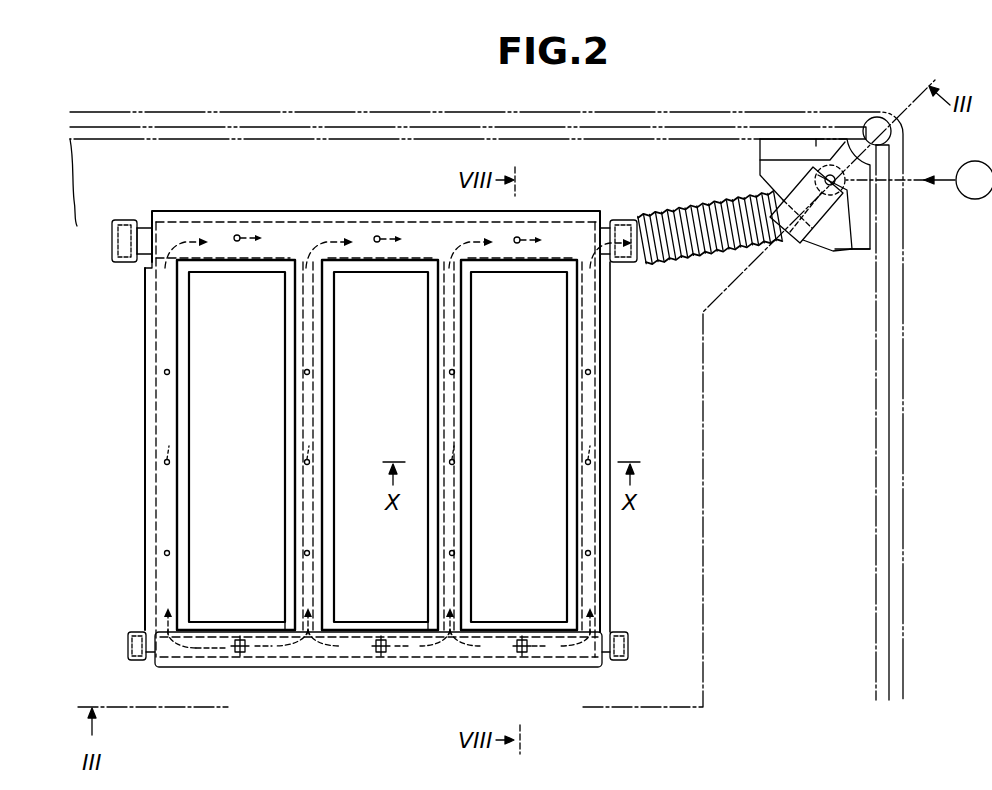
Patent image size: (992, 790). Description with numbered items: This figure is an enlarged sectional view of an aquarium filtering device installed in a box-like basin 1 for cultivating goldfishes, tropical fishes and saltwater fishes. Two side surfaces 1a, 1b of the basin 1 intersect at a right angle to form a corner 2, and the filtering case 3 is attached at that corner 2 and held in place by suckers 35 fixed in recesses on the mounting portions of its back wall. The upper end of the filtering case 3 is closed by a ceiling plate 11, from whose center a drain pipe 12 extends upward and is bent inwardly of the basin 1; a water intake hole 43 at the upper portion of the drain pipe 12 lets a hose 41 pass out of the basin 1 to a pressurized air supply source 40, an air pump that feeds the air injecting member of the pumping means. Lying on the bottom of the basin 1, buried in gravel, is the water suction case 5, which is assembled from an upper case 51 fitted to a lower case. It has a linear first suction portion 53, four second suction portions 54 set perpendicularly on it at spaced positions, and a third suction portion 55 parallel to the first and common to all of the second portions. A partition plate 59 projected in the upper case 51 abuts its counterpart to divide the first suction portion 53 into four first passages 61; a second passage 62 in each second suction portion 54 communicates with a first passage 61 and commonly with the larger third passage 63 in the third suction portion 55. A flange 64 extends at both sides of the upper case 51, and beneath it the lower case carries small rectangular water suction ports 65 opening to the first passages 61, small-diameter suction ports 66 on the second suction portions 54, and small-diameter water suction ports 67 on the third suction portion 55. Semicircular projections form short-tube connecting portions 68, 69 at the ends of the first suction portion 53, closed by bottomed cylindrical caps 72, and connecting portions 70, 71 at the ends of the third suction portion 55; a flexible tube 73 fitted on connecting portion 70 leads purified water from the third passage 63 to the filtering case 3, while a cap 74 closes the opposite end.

The basin 1 is at (905, 440).
The side surface 1a is at (735, 130).
The side surface 1b is at (886, 335).
The corner 2 is at (862, 128).
The filtering case 3 is at (838, 254).
The water suction case 5 is at (608, 387).
The ceiling plate 11 is at (763, 169).
The drain pipe 12 is at (814, 238).
The suckers 35 is at (816, 139).
The pressurized air supply source 40 is at (919, 180).
The hose 41 is at (827, 213).
The water intake hole 43 is at (823, 179).
The upper case 51 is at (455, 389).
The first suction portion 53 is at (410, 660).
The second suction portions 54 is at (446, 385).
The third suction portion 55 is at (305, 224).
The partition plate 59 is at (241, 654).
The first passages 61 is at (200, 660).
The second passage 62 is at (582, 514).
The third passage 63 is at (377, 235).
The flange 64 is at (438, 549).
The water suction ports 65 is at (240, 640).
The suction ports 66 is at (305, 374).
The water suction ports 67 is at (237, 234).
The connecting portion 68 is at (605, 662).
The connecting portion 69 is at (152, 660).
The connecting portion 70 is at (610, 223).
The connecting portion 71 is at (148, 222).
The caps 72 is at (135, 634).
The flexible tube 73 is at (670, 220).
The cap 74 is at (111, 240).